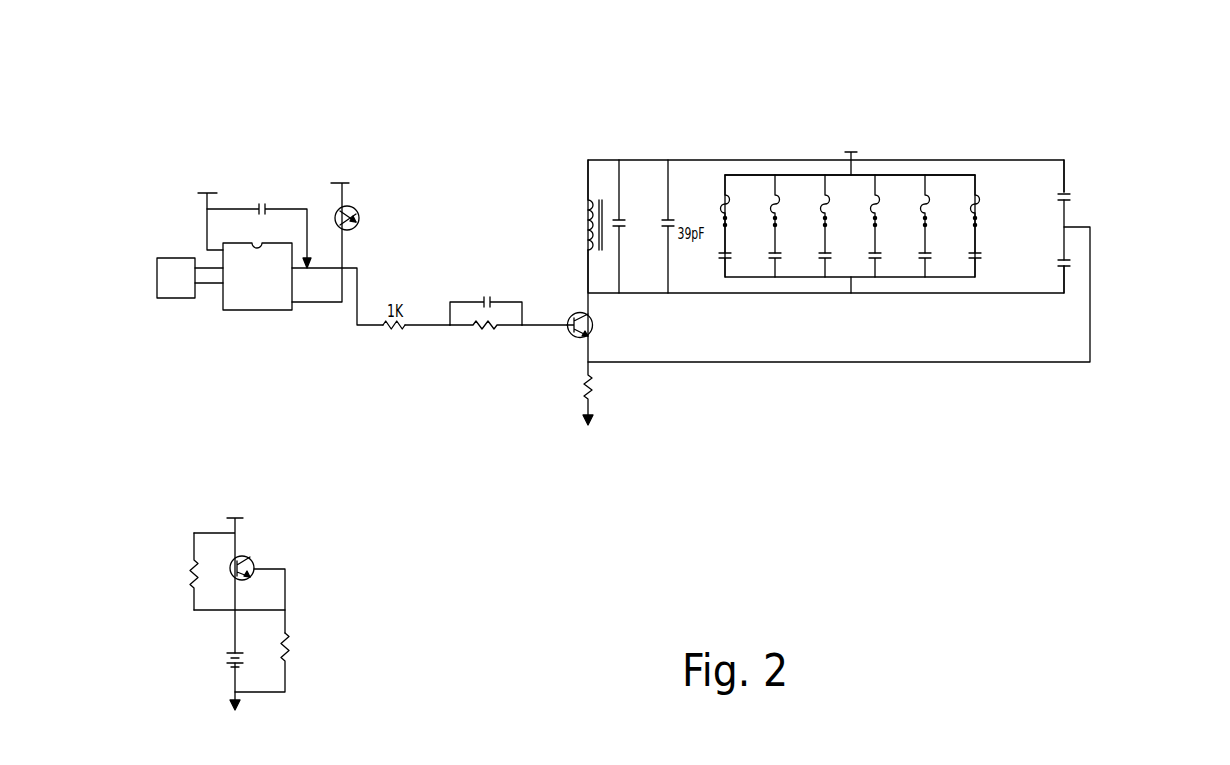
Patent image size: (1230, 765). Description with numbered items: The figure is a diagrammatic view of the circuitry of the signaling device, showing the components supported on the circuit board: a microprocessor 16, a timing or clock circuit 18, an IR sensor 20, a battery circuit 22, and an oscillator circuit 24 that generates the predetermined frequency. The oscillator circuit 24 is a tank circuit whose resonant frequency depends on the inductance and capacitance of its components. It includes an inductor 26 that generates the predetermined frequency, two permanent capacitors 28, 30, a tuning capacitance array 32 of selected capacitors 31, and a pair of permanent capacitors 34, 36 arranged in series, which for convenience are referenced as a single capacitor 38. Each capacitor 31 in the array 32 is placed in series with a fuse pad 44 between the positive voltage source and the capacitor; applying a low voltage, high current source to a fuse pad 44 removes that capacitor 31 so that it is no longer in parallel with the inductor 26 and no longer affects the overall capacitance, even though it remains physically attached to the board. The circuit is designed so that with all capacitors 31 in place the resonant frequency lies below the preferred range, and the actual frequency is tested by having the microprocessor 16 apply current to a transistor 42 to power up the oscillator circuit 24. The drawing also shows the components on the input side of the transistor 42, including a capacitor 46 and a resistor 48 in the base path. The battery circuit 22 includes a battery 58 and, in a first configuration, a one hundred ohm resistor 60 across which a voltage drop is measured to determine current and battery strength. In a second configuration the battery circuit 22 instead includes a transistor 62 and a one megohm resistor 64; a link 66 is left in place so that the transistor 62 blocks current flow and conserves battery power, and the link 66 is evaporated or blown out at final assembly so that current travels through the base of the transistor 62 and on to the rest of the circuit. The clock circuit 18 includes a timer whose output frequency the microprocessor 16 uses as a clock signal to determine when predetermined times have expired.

The microprocessor 16 is at (288, 222).
The clock circuit 18 is at (125, 226).
The IR sensor 20 is at (386, 198).
The battery circuit 22 is at (371, 548).
The oscillator circuit 24 is at (872, 190).
The inductor 26 is at (568, 205).
The permanent capacitor 28 is at (610, 245).
The permanent capacitor 30 is at (637, 202).
The capacitor 31 is at (722, 268).
The tuning capacitance array 32 is at (947, 168).
The permanent capacitor 34 is at (1091, 177).
The permanent capacitor 36 is at (1081, 263).
The single capacitor 38 is at (1104, 137).
The transistor 42 is at (567, 347).
The fuse pad 44 is at (740, 188).
The 1nF capacitor 46 is at (494, 268).
The 600K resistor 48 is at (482, 367).
The battery 58 is at (213, 662).
The resistor 60 is at (157, 567).
The transistor 62 is at (265, 545).
The resistor 64 is at (319, 653).
The link 66 is at (263, 608).